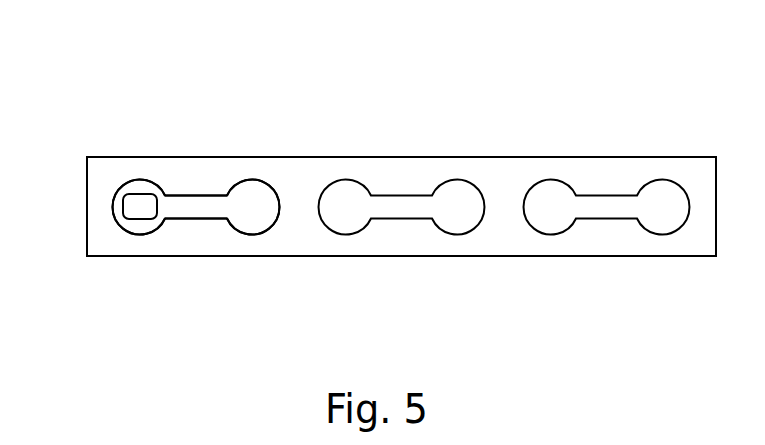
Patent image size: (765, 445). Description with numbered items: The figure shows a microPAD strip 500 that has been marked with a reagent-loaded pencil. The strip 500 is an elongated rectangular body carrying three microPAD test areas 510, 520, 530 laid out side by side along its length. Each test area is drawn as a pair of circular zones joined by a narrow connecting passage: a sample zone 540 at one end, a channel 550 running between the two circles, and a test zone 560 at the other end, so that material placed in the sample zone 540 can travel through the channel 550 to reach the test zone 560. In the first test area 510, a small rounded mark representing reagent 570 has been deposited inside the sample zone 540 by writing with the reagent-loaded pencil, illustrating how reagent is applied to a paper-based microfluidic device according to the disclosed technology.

The microPAD strip 500 is at (134, 75).
The microPAD test area 510 is at (195, 194).
The microPAD test area 520 is at (403, 194).
The microPAD test area 530 is at (617, 194).
The sample zone 540 is at (143, 226).
The channel 550 is at (202, 210).
The test zone 560 is at (250, 212).
The reagent 570 is at (128, 206).